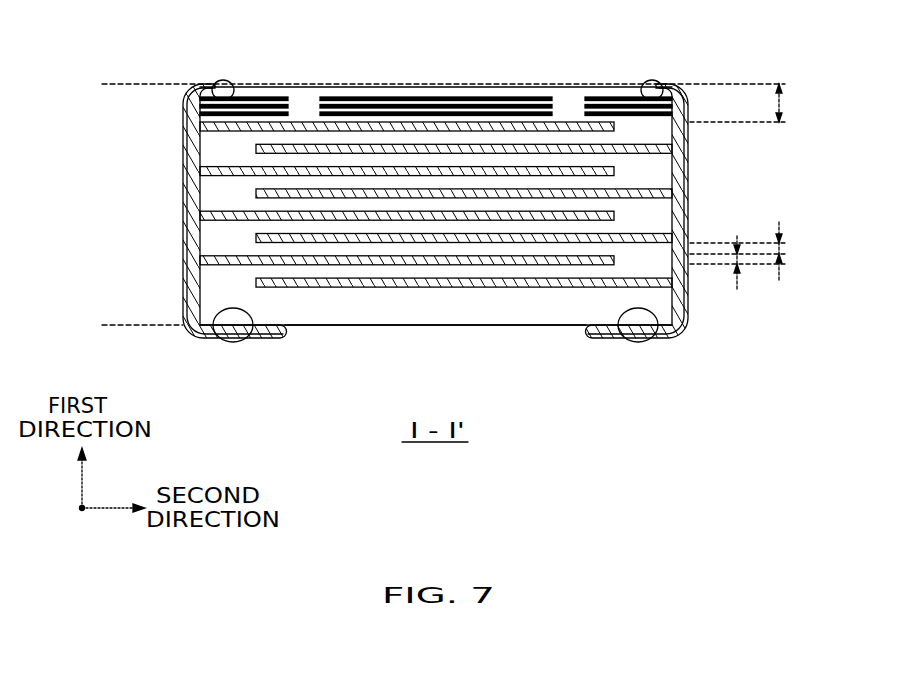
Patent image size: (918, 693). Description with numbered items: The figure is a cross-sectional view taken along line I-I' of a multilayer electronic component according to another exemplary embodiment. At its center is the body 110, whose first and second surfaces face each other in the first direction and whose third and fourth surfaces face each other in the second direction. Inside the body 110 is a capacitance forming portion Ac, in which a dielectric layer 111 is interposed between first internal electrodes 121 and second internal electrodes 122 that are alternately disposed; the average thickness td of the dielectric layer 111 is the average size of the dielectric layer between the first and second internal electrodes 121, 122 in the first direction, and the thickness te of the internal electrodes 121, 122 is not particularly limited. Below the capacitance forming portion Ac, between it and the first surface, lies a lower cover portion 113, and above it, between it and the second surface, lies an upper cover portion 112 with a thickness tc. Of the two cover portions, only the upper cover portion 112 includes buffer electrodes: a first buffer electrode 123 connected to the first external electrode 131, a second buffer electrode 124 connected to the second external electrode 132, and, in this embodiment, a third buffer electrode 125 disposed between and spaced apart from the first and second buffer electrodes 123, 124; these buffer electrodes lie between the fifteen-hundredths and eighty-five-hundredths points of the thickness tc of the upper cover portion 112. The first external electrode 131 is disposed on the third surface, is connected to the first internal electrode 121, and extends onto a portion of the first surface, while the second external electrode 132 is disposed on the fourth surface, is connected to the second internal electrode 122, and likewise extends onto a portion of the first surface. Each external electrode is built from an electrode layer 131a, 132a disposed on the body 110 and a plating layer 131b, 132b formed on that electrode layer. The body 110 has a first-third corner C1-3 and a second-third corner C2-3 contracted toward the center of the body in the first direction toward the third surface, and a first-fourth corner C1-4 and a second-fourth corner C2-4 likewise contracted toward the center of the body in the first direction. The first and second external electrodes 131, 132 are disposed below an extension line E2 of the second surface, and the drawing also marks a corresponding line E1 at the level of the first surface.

The body 110 is at (436, 166).
The dielectric layer 111 is at (307, 157).
The upper cover portion 112 is at (436, 61).
The lower cover portion 113 is at (450, 306).
The first internal electrode 121 is at (502, 123).
The second internal electrode 122 is at (547, 148).
The first buffer electrode 123 is at (265, 97).
The second buffer electrode 124 is at (595, 96).
The third buffer electrode 125 is at (455, 96).
The first external electrode 131 is at (154, 211).
The electrode layer 131a is at (197, 140).
The plating layer 131b is at (185, 177).
The second external electrode 132 is at (720, 211).
The electrode layer 132a is at (676, 149).
The plating layer 132b is at (686, 190).
The capacitance forming portion Ac is at (436, 196).
The second-third corner C2-3 is at (232, 82).
The second-fourth corner C2-4 is at (644, 82).
The first-third corner C1-3 is at (253, 343).
The first-fourth corner C1-4 is at (619, 343).
The extension line of the second surface E2 is at (428, 85).
The first surface E1 is at (127, 326).
The thickness of the upper cover portion tc is at (749, 103).
The average thickness of the dielectric layer td is at (750, 251).
The thickness of the internal electrodes te is at (737, 263).